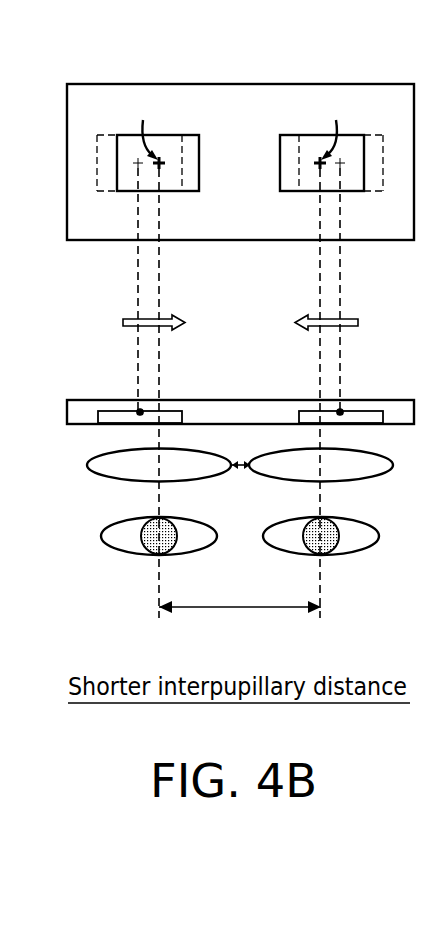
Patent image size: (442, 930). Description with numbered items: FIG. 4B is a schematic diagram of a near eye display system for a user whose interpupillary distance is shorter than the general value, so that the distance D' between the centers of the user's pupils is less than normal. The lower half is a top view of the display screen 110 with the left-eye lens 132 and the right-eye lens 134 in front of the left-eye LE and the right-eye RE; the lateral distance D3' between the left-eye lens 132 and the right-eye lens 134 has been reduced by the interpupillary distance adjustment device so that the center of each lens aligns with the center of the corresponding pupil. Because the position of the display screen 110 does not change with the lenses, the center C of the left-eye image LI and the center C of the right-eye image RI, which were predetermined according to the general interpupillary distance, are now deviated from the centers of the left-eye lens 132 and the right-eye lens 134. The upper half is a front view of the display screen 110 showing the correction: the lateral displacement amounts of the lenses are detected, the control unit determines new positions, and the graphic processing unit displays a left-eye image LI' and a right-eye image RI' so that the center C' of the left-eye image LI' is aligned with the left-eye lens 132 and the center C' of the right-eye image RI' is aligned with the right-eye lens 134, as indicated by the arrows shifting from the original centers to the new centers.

The display screen 110 is at (88, 84).
The left-eye lens 132 is at (103, 460).
The right-eye lens 134 is at (361, 463).
The left-eye image LI is at (136, 279).
The left-eye image LI' is at (158, 213).
The right-eye image RI is at (339, 279).
The right-eye image RI' is at (319, 213).
The center of the left-eye image / right-eye image C is at (257, 253).
The center of the adjusted left-eye image / right-eye image C' is at (241, 354).
The left-eye LE is at (113, 528).
The right-eye RE is at (353, 528).
The lateral distance D3' is at (245, 484).
The distance between the centers of the user's pupils D' is at (240, 624).